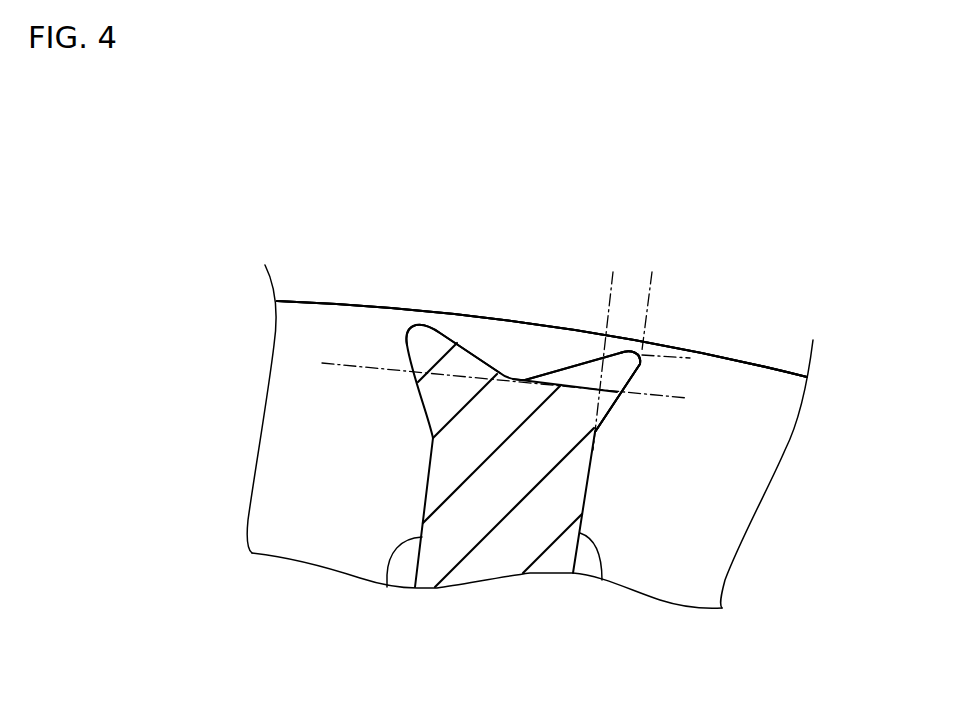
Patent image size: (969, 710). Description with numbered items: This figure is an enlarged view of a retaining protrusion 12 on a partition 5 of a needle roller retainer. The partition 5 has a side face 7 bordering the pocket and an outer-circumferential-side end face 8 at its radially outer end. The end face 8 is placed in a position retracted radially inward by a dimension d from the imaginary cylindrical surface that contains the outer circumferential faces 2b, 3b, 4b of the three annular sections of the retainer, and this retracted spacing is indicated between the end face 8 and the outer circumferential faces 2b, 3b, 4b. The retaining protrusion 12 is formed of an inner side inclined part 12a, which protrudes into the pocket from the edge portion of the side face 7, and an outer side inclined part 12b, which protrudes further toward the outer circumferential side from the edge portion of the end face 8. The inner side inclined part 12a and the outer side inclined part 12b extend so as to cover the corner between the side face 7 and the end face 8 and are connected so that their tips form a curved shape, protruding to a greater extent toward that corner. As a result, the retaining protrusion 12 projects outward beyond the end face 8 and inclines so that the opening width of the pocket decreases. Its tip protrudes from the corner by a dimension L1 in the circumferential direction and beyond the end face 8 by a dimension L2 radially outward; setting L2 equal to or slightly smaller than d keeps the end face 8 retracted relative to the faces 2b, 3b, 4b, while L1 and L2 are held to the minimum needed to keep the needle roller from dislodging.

The outer circumferential face 2b is at (773, 360).
The outer circumferential face 3b is at (542, 339).
The outer circumferential face 4b is at (542, 339).
The partition 5 is at (402, 462).
The side face 7 is at (387, 587).
The outer-circumferential-side end face 8 is at (522, 377).
The retaining protrusion 12 is at (394, 315).
The inner side inclined part 12a is at (608, 430).
The outer side inclined part 12b is at (575, 364).
The dimension d is at (338, 309).
The dimension L1 is at (649, 277).
The dimension L2 is at (681, 359).